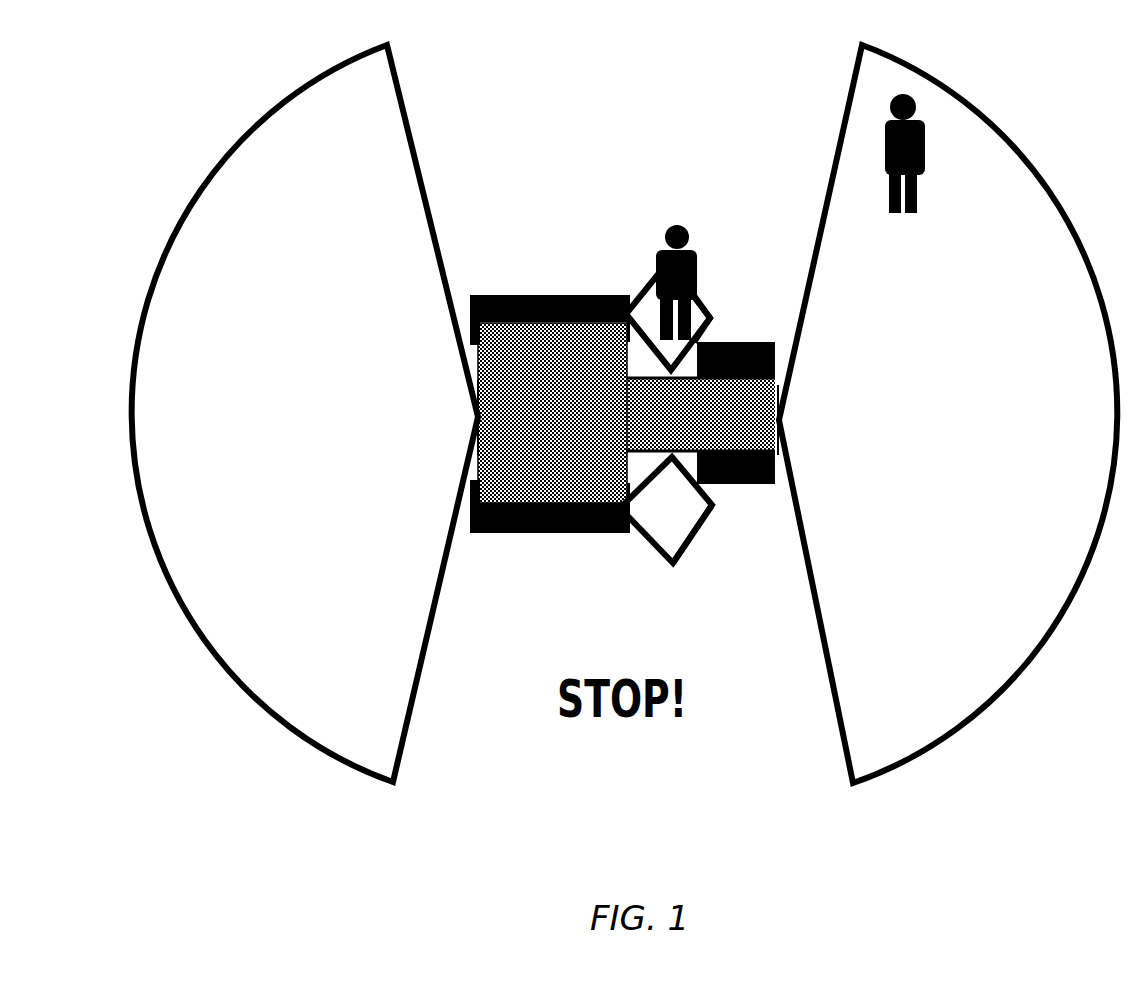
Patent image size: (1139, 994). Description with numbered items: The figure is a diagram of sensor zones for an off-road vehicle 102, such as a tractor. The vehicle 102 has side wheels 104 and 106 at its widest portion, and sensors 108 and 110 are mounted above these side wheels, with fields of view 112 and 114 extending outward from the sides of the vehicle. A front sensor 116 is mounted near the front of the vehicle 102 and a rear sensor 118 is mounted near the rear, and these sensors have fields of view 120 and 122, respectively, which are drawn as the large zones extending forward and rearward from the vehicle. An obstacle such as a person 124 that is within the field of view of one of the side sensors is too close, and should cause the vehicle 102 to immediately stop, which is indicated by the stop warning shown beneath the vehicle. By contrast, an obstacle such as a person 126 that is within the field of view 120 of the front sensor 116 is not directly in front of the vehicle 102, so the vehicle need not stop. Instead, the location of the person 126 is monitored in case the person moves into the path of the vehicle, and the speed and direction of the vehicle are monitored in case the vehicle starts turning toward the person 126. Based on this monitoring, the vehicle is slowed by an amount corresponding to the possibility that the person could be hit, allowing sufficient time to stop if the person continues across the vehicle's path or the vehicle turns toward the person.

The off-road vehicle 102 is at (626, 413).
The side wheel 104 is at (535, 296).
The side wheel 106 is at (530, 535).
The sensor 108 is at (622, 509).
The sensor 110 is at (626, 313).
The field of view 112 is at (685, 553).
The field of view 114 is at (709, 320).
The front sensor 116 is at (778, 423).
The rear sensor 118 is at (477, 418).
The field of view 120 is at (1068, 215).
The field of view 122 is at (200, 182).
The person 124 is at (678, 222).
The person 126 is at (928, 135).